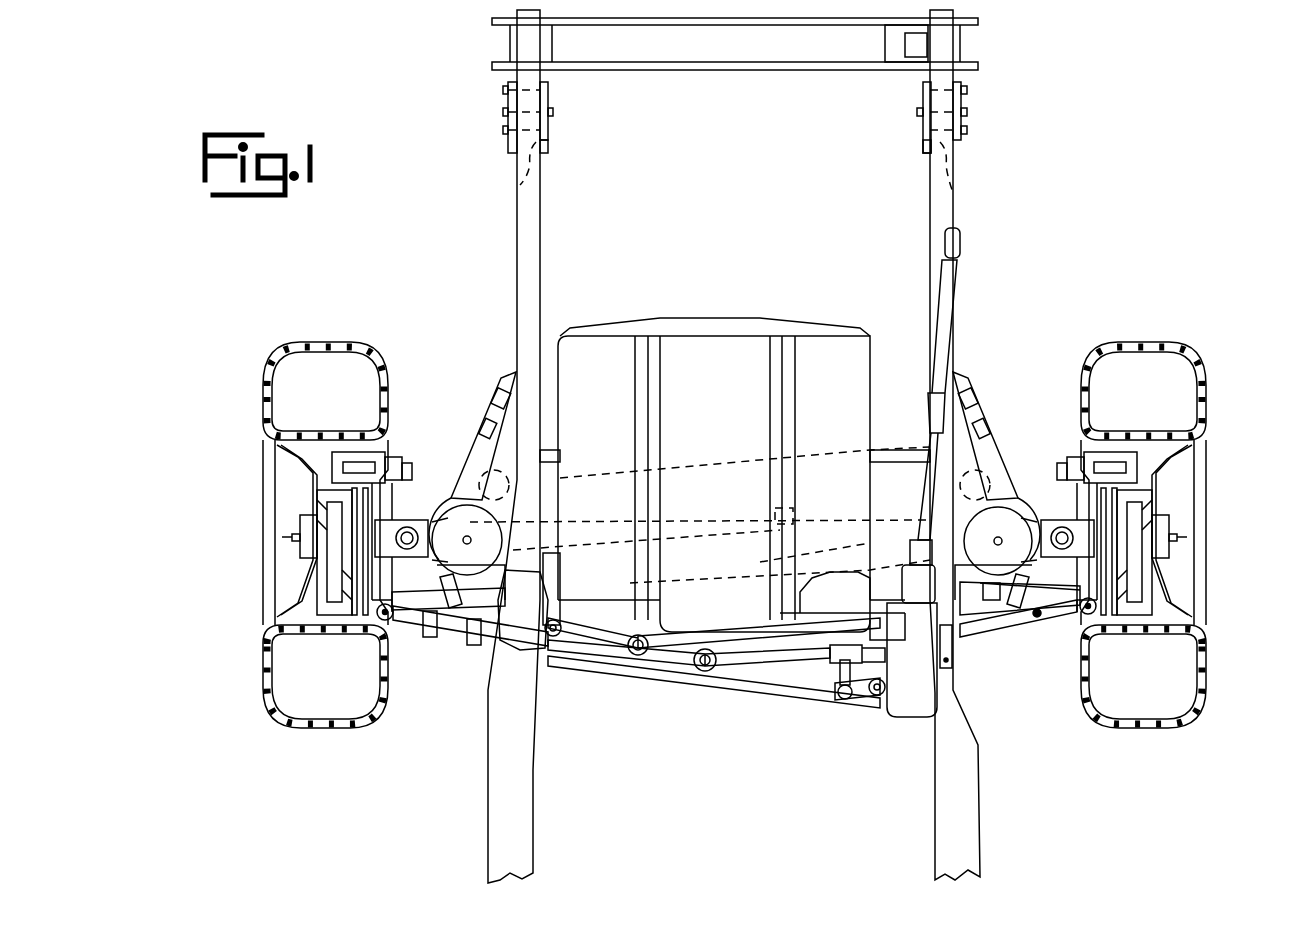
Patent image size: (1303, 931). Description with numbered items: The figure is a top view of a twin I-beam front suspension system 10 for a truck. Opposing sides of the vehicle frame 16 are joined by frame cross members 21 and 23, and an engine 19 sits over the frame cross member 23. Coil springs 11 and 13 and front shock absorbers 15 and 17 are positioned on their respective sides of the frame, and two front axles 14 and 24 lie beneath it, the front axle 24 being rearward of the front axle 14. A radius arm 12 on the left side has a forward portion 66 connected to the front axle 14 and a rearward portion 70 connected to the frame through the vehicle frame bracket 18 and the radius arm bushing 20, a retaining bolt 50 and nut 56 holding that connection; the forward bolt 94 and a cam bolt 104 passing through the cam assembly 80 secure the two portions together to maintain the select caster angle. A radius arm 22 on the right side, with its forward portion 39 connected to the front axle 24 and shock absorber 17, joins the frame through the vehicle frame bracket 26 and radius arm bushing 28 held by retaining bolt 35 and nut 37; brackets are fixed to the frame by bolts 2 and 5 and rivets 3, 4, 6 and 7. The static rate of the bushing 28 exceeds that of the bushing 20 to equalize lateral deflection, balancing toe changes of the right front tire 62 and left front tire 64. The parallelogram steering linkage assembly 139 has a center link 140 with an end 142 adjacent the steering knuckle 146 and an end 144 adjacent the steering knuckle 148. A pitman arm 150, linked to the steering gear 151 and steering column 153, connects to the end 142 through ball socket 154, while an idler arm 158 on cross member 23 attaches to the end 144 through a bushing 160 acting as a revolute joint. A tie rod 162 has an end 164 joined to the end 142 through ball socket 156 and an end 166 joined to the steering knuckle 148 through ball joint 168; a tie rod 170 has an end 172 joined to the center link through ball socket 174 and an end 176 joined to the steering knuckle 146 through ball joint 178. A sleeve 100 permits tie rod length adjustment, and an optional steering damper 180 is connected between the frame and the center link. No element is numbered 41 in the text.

The bolt 2 is at (955, 195).
The rivet 3 is at (967, 130).
The rivet 4 is at (967, 90).
The bolt 5 is at (520, 185).
The rivet 6 is at (503, 130).
The rivet 7 is at (503, 90).
The twin I-beam front suspension system 10 is at (1228, 249).
The coil spring 11 is at (1010, 505).
The radius arm 12 is at (1015, 389).
The coil spring 13 is at (462, 505).
The front axle 14 is at (885, 548).
The front shock absorber 15 is at (985, 470).
The vehicle frame 16 is at (541, 215).
The front shock absorber 17 is at (492, 450).
The vehicle frame bracket 18 is at (967, 100).
The engine 19 is at (718, 318).
The radius arm bushing 20 is at (955, 162).
The frame cross member 21 is at (745, 70).
The radius arm 22 is at (459, 384).
The frame cross member 23 is at (897, 450).
The front axle 24 is at (588, 520).
The vehicle frame bracket 26 is at (548, 92).
The radius arm bushing 28 is at (548, 148).
The retaining bolt 35 is at (503, 112).
The nut 37 is at (553, 112).
The forward portion 39 is at (468, 470).
The upper control arm 41 is at (512, 385).
The retaining bolt 50 is at (967, 112).
The nut 56 is at (917, 114).
The right front tire 62 is at (340, 730).
The left front tire 64 is at (1145, 730).
The forward portion 66 is at (1000, 495).
The rearward portion 70 is at (958, 383).
The cam assembly 80 is at (970, 392).
The forward bolt 94 is at (985, 440).
The sleeve 100 is at (470, 642).
The cam bolt 104 is at (990, 420).
The parallelogram steering linkage assembly 139 is at (710, 752).
The center link 140 is at (600, 690).
The end of center link 142 is at (870, 740).
The end of center link 144 is at (556, 640).
The steering knuckle 146 is at (1065, 585).
The steering knuckle 148 is at (440, 590).
The pitman arm 150 is at (856, 575).
The steering gear 151 is at (905, 718).
The steering column 153 is at (958, 300).
The ball socket 154 is at (879, 697).
The ball socket 156 is at (845, 700).
The idler arm 158 is at (562, 575).
The bushing 160 is at (526, 645).
The tie rod 162 is at (652, 675).
The tie rod end 164 is at (832, 702).
The tie rod end 166 is at (430, 637).
The ball joint 168 is at (390, 622).
The tie rod 170 is at (985, 638).
The tie rod end 172 is at (680, 630).
The ball socket 174 is at (640, 635).
The tie rod end 176 is at (1040, 620).
The ball joint 178 is at (1082, 614).
The steering damper 180 is at (822, 660).